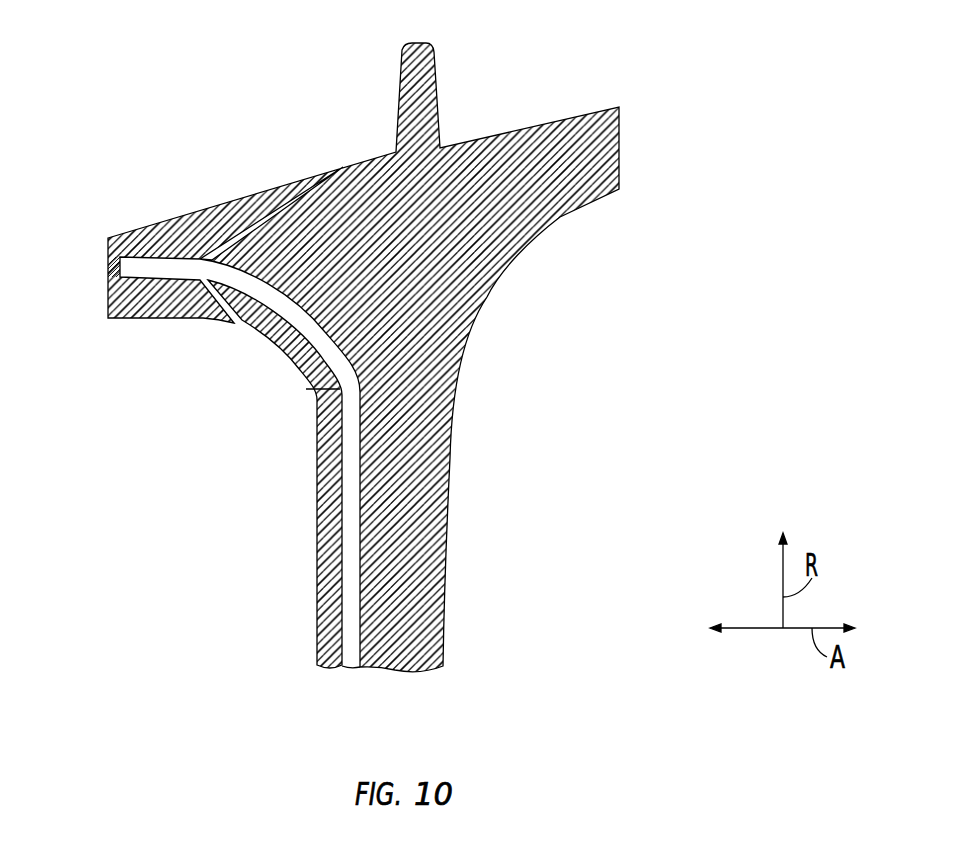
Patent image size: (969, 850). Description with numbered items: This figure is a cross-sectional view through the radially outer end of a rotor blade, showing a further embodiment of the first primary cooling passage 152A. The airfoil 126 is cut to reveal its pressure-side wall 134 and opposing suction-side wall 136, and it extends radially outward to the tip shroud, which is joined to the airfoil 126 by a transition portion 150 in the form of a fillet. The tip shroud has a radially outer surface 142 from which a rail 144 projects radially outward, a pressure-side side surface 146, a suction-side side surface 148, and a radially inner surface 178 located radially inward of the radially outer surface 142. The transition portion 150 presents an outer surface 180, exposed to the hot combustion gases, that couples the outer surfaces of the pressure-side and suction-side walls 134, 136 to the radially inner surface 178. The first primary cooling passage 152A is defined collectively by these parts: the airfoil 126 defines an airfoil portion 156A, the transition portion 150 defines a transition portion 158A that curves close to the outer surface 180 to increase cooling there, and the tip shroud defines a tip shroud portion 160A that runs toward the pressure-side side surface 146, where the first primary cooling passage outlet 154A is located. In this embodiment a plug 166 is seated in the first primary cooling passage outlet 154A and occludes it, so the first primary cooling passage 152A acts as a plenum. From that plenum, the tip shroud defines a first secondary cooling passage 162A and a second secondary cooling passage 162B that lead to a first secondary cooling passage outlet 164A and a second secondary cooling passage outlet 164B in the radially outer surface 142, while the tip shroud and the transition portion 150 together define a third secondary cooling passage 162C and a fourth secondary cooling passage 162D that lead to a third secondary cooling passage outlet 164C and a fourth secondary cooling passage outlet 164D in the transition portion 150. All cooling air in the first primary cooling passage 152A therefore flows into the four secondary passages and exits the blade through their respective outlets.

The airfoil 126 is at (468, 599).
The pressure-side wall 134 is at (315, 624).
The suction-side wall 136 is at (452, 425).
The radially outer surface 142 is at (562, 120).
The rail 144 is at (439, 106).
The pressure-side side surface 146 is at (108, 296).
The suction-side side surface 148 is at (621, 148).
The transition portion 150 is at (503, 247).
The first primary cooling passage 152A is at (349, 391).
The first primary cooling passage outlet 154A is at (95, 259).
The airfoil portion 156A is at (352, 490).
The transition portion 158A is at (308, 311).
The tip shroud portion 160A is at (198, 278).
The first secondary cooling passage 162A is at (165, 232).
The second secondary cooling passage 162B is at (288, 208).
The third secondary cooling passage 162C is at (215, 272).
The fourth secondary cooling passage 162D is at (369, 390).
The first secondary cooling passage outlet 164A is at (187, 204).
The second secondary cooling passage outlet 164B is at (278, 176).
The third secondary cooling passage outlet 164C is at (232, 334).
The fourth secondary cooling passage outlet 164D is at (296, 389).
The plug 166 is at (112, 237).
The radially inner surface 178 is at (613, 190).
The outer surface 180 is at (560, 218).